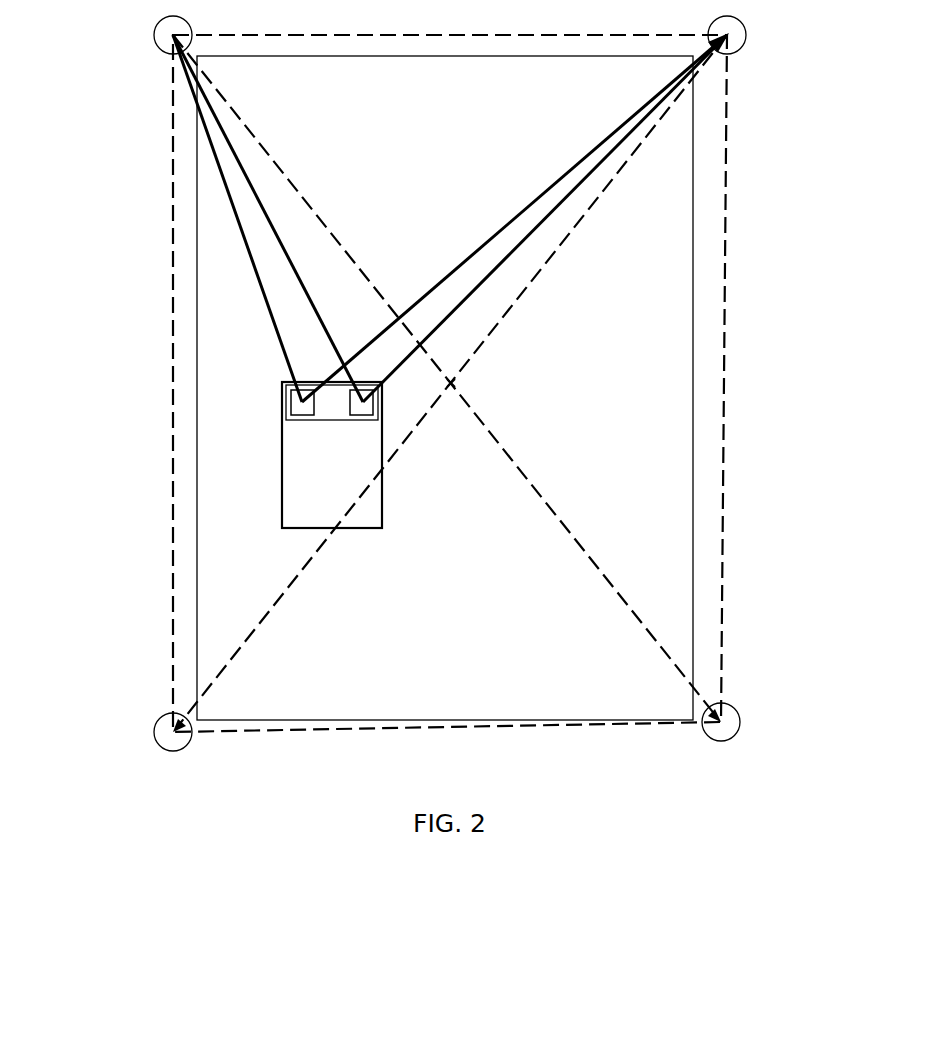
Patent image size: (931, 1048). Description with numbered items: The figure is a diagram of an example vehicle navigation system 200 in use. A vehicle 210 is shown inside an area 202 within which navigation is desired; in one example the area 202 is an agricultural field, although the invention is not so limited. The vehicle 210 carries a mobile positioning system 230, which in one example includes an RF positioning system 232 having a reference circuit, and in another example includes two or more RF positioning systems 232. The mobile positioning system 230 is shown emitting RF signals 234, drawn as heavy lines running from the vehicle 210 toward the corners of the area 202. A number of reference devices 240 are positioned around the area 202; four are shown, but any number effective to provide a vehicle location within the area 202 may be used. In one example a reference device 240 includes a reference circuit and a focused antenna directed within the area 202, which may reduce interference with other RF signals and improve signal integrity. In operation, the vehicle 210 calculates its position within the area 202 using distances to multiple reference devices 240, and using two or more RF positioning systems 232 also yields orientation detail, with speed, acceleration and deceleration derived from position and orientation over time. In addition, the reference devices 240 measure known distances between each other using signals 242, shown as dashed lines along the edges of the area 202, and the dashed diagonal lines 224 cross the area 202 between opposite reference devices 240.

The image capture system 200 is at (652, 809).
The display area 202 is at (232, 628).
The image capture device 210 is at (308, 487).
The diagonal reference lines 224 is at (491, 280).
The sensor module 230 is at (378, 420).
The image sensors 232 is at (368, 400).
The lines of sight 234 is at (248, 247).
The corner markers 240 is at (730, 730).
The dashed boundary 242 is at (173, 300).